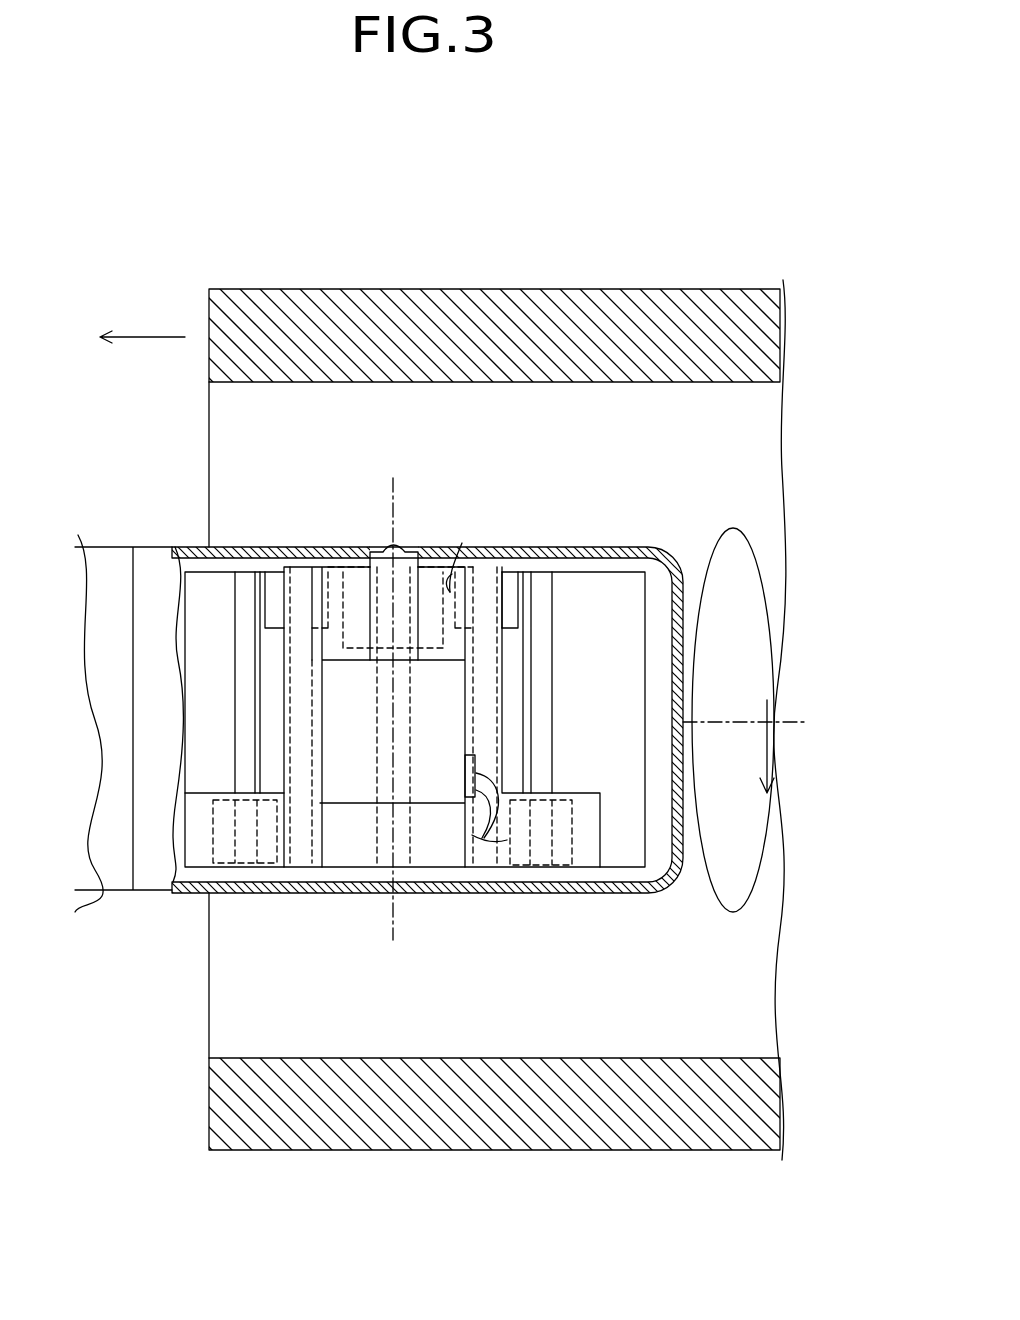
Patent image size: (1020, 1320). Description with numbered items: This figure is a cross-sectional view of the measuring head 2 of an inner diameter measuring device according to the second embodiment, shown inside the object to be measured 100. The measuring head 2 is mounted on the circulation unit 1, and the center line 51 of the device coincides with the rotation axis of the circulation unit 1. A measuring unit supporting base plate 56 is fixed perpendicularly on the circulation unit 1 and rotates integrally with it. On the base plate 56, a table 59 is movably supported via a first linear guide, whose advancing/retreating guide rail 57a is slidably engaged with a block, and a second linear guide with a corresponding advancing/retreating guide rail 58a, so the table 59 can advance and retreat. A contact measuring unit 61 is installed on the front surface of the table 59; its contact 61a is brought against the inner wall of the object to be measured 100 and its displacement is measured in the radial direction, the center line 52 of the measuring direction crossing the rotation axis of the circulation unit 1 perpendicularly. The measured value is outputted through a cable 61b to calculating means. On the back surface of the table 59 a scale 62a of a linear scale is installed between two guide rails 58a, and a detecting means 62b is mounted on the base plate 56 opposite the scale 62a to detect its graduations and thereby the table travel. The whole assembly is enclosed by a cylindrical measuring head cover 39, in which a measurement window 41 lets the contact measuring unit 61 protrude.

The object to be measured 100 is at (480, 289).
The circulation unit 1 is at (105, 547).
The measuring head 2 is at (634, 512).
The measuring head cover 39 is at (648, 893).
The measurement window 41 is at (347, 547).
The center line of the inner diameter measuring device 51 is at (720, 715).
The center line of a measuring direction 52 is at (398, 503).
The measuring unit supporting base plate 56 is at (650, 600).
The advancing/retreating guide rail 57a is at (240, 585).
The advancing/retreating guide rail 58a is at (301, 582).
The table 59 is at (503, 602).
The contact measuring unit 61 is at (370, 640).
The contact 61a is at (400, 547).
The cable 61b is at (507, 822).
The scale 62a is at (402, 850).
The detecting means 62b is at (462, 543).